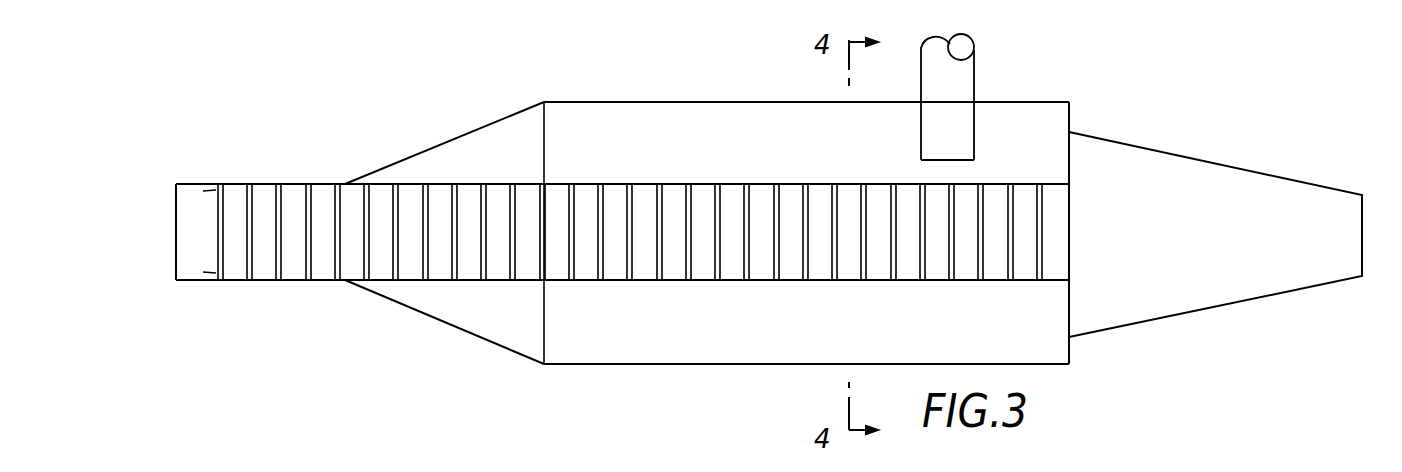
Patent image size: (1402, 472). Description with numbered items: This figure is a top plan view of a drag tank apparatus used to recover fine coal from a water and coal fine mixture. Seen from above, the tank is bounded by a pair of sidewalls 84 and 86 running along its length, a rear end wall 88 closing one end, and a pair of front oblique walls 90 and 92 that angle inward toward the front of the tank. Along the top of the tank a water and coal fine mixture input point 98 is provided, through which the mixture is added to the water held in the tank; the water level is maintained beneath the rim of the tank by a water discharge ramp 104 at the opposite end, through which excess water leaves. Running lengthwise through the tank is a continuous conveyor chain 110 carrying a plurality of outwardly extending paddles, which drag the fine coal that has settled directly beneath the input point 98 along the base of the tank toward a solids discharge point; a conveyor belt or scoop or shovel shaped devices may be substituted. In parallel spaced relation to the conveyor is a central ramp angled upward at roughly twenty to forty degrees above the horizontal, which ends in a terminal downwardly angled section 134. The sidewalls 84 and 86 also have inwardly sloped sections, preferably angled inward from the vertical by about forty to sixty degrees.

The sidewall 84 is at (600, 102).
The sidewall 86 is at (632, 364).
The rear end wall 88 is at (1070, 346).
The front oblique wall 90 is at (452, 140).
The front oblique wall 92 is at (433, 318).
The water and coal fine mixture input point 98 is at (940, 160).
The water discharge ramp 104 is at (1248, 300).
The continuous conveyor chain 110 is at (297, 184).
The terminal downwardly angled section 134 is at (192, 184).